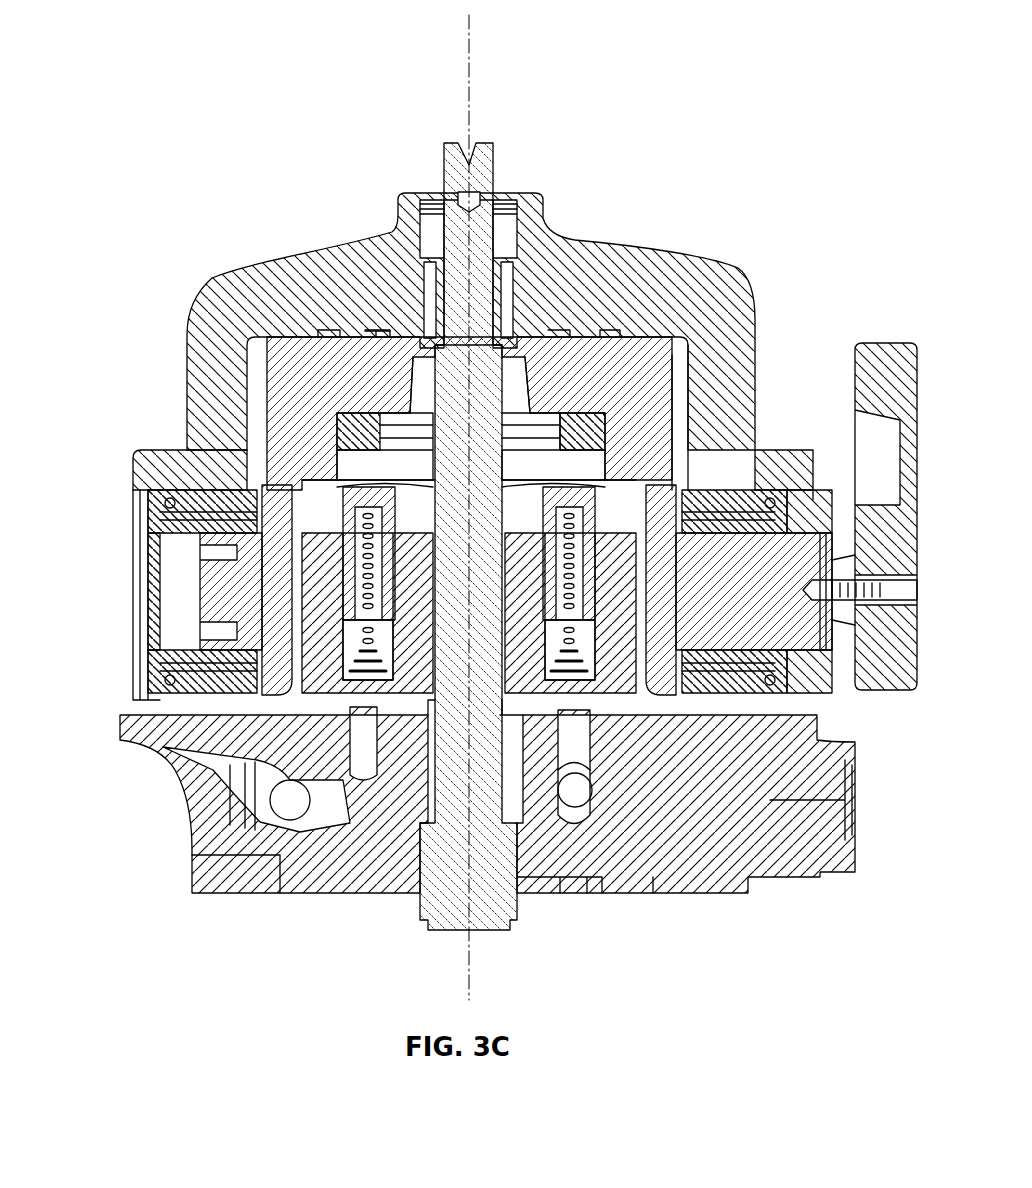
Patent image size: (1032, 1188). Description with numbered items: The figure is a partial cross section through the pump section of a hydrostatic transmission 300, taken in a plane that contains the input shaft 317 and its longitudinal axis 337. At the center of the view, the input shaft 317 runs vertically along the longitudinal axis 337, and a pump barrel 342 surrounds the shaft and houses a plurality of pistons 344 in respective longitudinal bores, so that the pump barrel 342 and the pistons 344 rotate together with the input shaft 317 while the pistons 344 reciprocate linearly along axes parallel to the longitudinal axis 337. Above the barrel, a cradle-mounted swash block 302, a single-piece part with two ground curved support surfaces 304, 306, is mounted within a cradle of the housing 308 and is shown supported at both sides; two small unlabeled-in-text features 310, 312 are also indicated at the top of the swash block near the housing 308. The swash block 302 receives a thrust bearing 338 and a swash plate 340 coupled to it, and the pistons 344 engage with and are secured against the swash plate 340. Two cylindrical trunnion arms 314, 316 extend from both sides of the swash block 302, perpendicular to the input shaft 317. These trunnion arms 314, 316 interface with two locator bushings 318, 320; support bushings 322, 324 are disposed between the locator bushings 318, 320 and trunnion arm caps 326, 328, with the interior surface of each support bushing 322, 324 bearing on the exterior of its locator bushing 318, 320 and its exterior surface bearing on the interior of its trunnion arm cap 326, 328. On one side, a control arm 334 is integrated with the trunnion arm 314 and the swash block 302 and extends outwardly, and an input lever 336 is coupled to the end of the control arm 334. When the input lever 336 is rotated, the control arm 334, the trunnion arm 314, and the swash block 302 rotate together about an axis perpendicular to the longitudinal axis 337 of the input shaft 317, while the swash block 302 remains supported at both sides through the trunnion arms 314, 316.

The hydrostatic transmission 300 is at (205, 188).
The cradle-mounted swash block 302 is at (287, 368).
The ground curved support surface 304 is at (586, 342).
The ground curved support surface 306 is at (358, 338).
The housing 308 is at (237, 278).
The mounting tab 310 is at (620, 328).
The mounting tab 312 is at (376, 328).
The trunnion arm 314 is at (692, 488).
The trunnion arm 316 is at (215, 580).
The input shaft 317 is at (497, 270).
The locator bushing 318 is at (815, 500).
The locator bushing 320 is at (165, 525).
The support bushing 322 is at (765, 478).
The support bushing 324 is at (125, 470).
The trunnion arm cap 326 is at (735, 490).
The trunnion arm cap 328 is at (185, 450).
The control arm 334 is at (828, 500).
The input lever 336 is at (892, 345).
The longitudinal axis 337 is at (466, 75).
The thrust bearing 338 is at (590, 426).
The swash plate 340 is at (580, 458).
The pump barrel 342 is at (318, 610).
The piston 344 is at (340, 565).